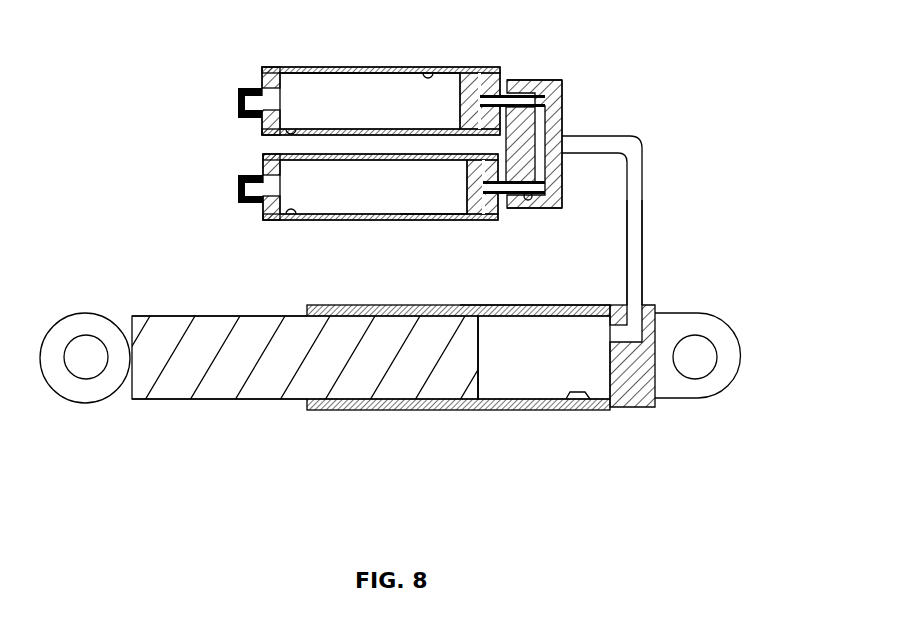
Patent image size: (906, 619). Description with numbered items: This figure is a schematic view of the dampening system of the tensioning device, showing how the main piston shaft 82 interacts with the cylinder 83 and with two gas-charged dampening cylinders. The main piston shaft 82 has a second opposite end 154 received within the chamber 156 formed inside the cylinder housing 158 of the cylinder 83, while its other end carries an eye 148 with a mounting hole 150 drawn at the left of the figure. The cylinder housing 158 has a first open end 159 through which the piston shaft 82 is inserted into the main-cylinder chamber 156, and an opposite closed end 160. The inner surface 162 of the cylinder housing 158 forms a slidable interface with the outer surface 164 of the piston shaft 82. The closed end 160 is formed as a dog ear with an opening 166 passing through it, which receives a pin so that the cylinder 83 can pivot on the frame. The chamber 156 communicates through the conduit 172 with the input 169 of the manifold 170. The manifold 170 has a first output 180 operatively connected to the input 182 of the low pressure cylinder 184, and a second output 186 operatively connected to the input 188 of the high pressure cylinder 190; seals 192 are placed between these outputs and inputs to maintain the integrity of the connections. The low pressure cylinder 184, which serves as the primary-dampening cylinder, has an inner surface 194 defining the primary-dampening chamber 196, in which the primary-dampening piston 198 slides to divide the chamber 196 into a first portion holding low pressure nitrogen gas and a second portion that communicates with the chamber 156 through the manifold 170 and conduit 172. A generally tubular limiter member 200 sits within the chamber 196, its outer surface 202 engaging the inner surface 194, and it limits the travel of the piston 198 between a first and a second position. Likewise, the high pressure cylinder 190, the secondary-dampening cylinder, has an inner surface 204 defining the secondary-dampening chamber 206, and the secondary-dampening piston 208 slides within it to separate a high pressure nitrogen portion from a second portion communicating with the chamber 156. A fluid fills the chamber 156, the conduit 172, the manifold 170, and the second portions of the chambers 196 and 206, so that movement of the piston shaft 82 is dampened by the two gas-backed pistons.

The main piston shaft 82 is at (268, 400).
The cylinder 83 is at (522, 422).
The rod end eye 148 is at (85, 313).
The rod end mounting hole 150 is at (88, 373).
The second opposite end 154 is at (386, 326).
The chamber 156 is at (544, 357).
The cylinder housing 158 is at (553, 305).
The first open end 159 is at (318, 305).
The closed end 160 is at (680, 313).
The inner surface 162 is at (600, 410).
The outer surface 164 is at (170, 400).
The opening 166 is at (700, 370).
The input 169 is at (565, 135).
The manifold 170 is at (565, 82).
The conduit 172 is at (643, 208).
The first output 180 is at (562, 105).
The input 182 is at (481, 106).
The low pressure cylinder 184 is at (228, 66).
The second output 186 is at (529, 212).
The input 188 is at (483, 216).
The high pressure cylinder 190 is at (250, 214).
The seals 192 is at (510, 82).
The inner surface 194 is at (428, 70).
The primary-dampening chamber 196 is at (330, 76).
The primary-dampening piston 198 is at (478, 70).
The limiter member 200 is at (260, 120).
The outer surface 202 is at (298, 67).
The inner surface 204 is at (280, 222).
The secondary-dampening chamber 206 is at (345, 205).
The secondary-dampening piston 208 is at (437, 217).